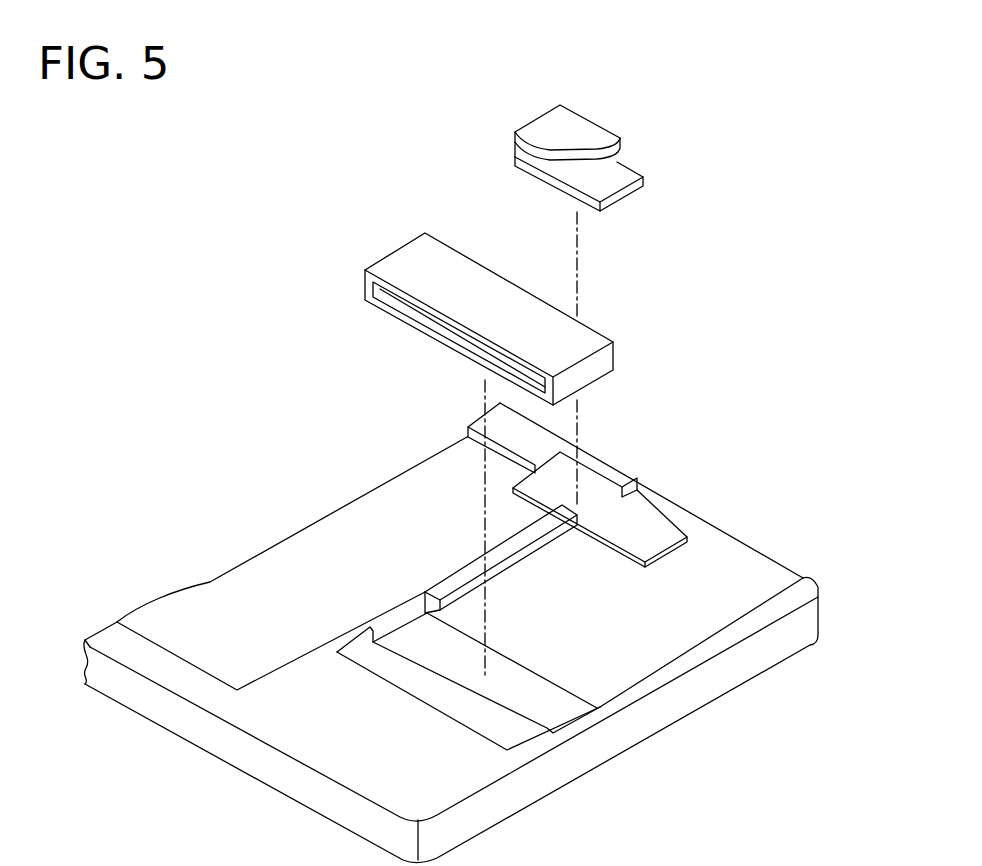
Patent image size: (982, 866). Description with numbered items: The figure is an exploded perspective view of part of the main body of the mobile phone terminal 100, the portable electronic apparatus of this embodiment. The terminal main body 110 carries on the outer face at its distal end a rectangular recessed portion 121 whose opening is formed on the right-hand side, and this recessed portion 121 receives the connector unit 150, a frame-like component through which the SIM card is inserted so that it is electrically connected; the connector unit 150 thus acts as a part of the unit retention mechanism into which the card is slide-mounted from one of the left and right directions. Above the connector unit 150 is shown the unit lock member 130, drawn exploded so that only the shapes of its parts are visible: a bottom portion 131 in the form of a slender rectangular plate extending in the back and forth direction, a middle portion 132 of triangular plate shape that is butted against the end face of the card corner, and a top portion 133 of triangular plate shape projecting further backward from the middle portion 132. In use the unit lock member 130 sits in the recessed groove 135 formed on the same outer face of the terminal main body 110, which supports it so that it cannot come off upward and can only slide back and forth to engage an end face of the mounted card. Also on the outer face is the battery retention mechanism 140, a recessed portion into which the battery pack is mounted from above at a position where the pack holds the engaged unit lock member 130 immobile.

The mobile phone terminal 100 is at (805, 155).
The terminal main body 110 is at (770, 657).
The recessed portion 121 is at (637, 653).
The unit lock member 130 is at (650, 155).
The bottom portion 131 is at (625, 192).
The middle portion 132 is at (523, 156).
The top portion 133 is at (580, 128).
The recessed groove 135 is at (636, 536).
The battery retention mechanism 140 is at (328, 551).
The connector unit 150 is at (405, 255).